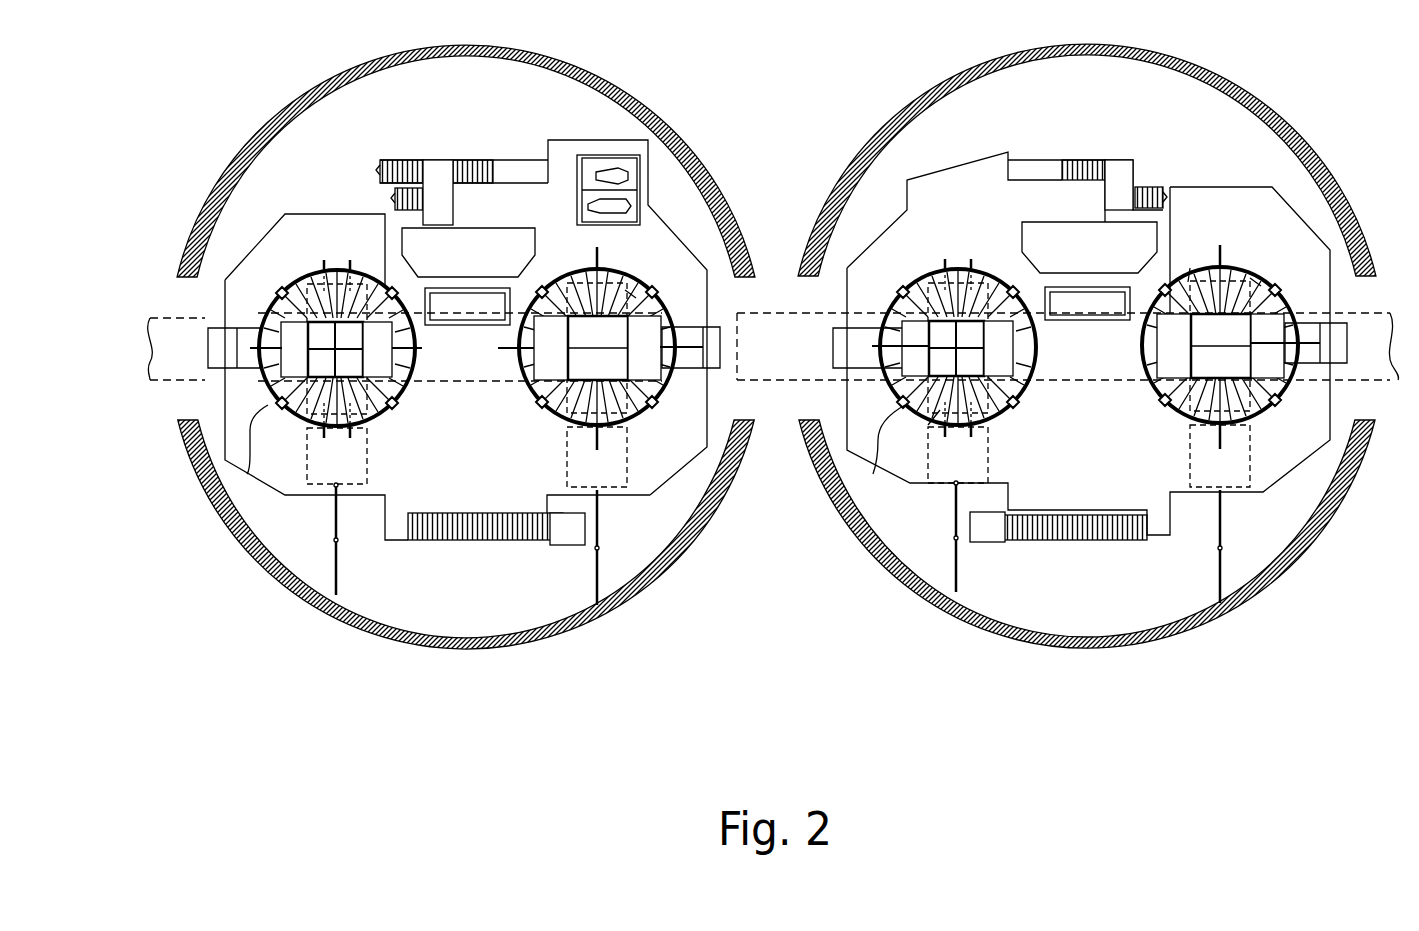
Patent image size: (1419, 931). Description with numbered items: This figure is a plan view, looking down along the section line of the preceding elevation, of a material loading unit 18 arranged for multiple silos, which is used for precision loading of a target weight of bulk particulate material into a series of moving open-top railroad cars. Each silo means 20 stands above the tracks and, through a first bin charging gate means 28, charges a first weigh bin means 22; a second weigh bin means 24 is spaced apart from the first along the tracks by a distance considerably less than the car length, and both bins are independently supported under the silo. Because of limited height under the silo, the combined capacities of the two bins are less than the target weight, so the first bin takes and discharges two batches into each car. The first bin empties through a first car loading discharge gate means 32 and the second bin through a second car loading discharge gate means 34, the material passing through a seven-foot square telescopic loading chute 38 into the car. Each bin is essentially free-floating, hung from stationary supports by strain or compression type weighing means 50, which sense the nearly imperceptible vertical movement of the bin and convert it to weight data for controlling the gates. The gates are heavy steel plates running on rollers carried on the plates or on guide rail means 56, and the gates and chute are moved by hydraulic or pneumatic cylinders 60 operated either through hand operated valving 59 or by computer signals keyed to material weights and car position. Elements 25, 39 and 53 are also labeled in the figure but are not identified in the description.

The material loading unit 18 is at (1318, 222).
The silo means 20 is at (600, 65).
The first weigh bin means 22 is at (662, 303).
The second weigh bin means 24 is at (306, 280).
The power source 25 is at (622, 166).
The first bin charging gate means 28 is at (625, 292).
The first car loading discharge gate means 32 is at (1000, 418).
The second car loading discharge gate means 34 is at (247, 474).
The telescopic loading chute 38 is at (368, 480).
The support rod 39 is at (343, 568).
The weighing means 50 is at (278, 290).
The connector 53 is at (437, 162).
The guide rail means 56 is at (940, 410).
The hand operated valving 59 is at (457, 300).
The hydraulic or pneumatic cylinders 60 is at (1300, 340).